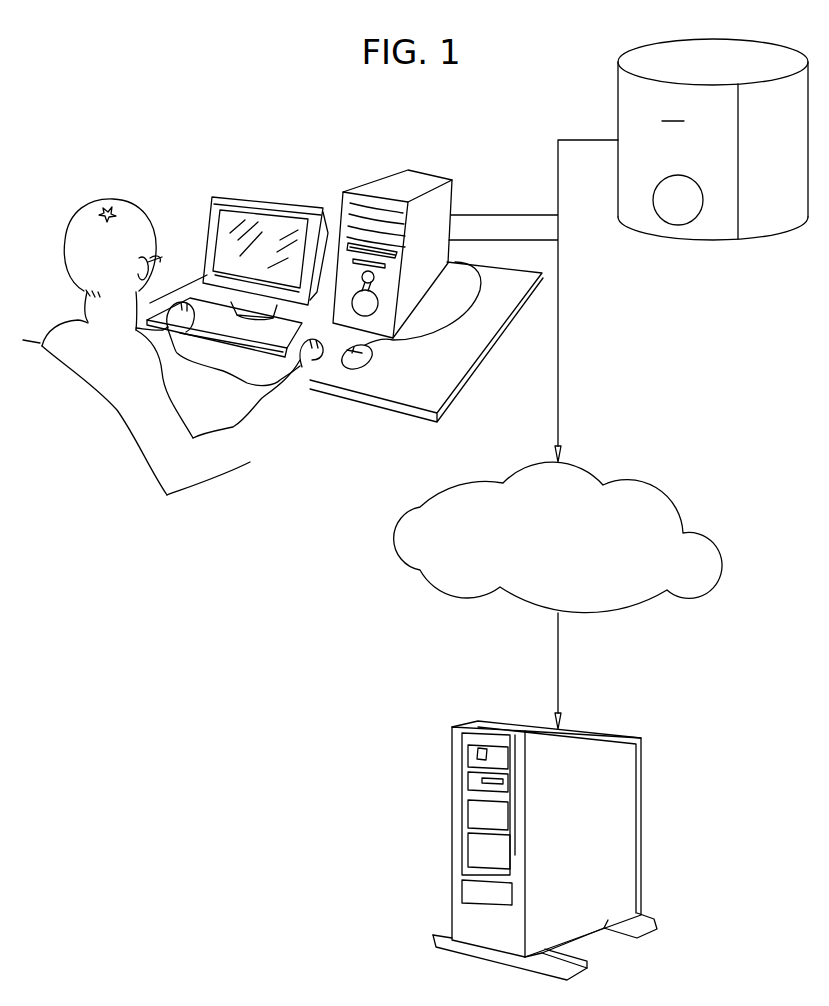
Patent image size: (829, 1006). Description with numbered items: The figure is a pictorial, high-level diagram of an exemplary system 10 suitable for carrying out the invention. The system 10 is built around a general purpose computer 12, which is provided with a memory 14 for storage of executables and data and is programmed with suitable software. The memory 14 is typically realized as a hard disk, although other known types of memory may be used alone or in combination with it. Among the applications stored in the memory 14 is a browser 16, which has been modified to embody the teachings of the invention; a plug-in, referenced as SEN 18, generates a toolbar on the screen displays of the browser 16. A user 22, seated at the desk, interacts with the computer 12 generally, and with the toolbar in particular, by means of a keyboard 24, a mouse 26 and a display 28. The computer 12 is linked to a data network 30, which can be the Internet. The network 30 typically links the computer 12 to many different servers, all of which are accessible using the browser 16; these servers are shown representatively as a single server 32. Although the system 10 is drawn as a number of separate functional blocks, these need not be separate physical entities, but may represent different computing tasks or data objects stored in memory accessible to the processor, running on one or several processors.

The system 10 is at (210, 132).
The general purpose computer 12 is at (387, 186).
The memory 14 is at (705, 140).
The browser 16 is at (677, 128).
The SEN 18 is at (672, 225).
The user 22 is at (83, 220).
The keyboard 24 is at (230, 323).
The mouse 26 is at (357, 368).
The display 28 is at (265, 207).
The data network 30 is at (718, 567).
The server 32 is at (640, 810).